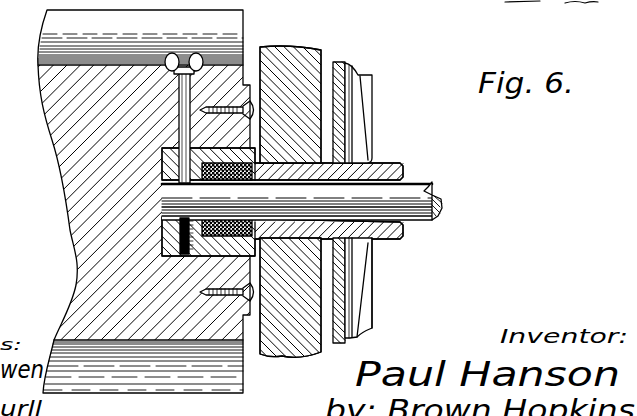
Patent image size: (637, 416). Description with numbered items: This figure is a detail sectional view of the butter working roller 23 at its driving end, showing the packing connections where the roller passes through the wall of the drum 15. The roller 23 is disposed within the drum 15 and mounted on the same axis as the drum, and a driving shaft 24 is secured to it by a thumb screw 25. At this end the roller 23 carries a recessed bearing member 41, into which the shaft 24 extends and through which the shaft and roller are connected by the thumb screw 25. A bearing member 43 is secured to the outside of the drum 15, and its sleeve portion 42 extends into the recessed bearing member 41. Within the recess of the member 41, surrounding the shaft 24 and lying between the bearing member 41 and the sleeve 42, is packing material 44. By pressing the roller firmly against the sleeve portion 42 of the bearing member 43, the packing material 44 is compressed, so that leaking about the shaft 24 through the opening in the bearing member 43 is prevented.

The drum 15 is at (300, 62).
The butter working roller 23 is at (50, 86).
The driving shaft 24 is at (428, 192).
The thumb screw 25 is at (187, 95).
The recessed bearing member 41 is at (162, 179).
The sleeve portion 42 is at (282, 167).
The bearing member 43 is at (372, 165).
The packing material 44 is at (180, 244).